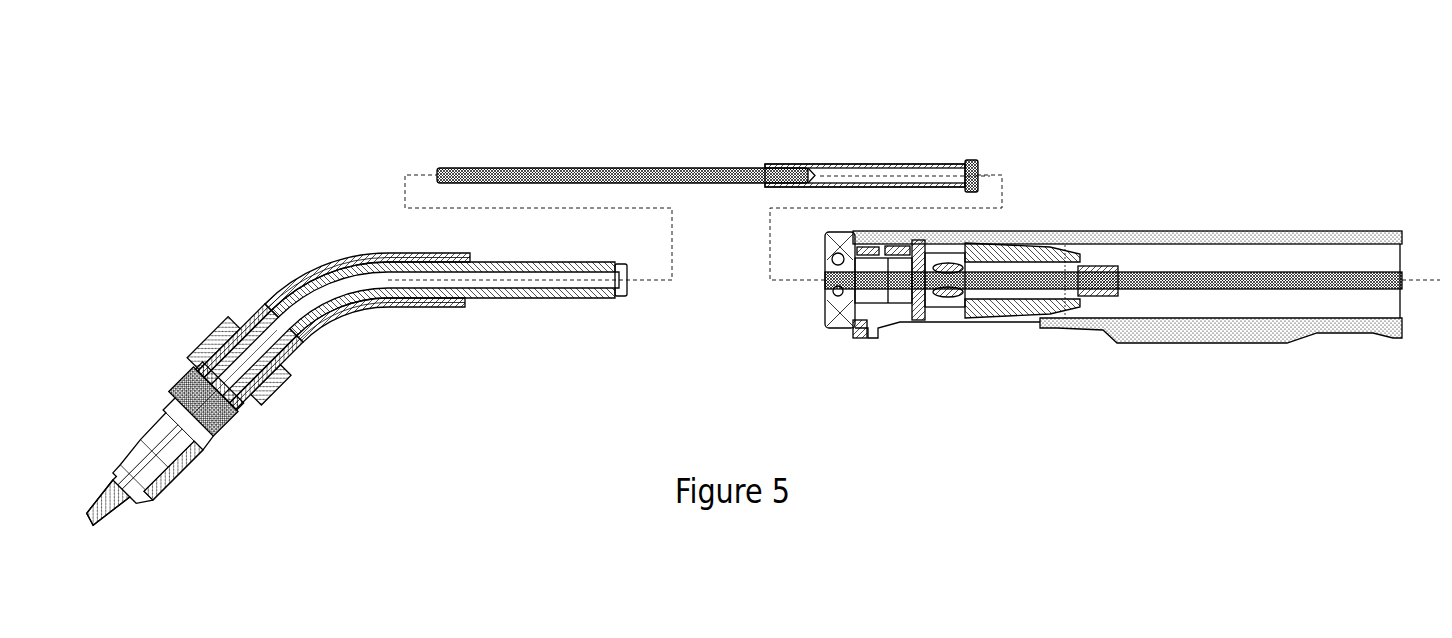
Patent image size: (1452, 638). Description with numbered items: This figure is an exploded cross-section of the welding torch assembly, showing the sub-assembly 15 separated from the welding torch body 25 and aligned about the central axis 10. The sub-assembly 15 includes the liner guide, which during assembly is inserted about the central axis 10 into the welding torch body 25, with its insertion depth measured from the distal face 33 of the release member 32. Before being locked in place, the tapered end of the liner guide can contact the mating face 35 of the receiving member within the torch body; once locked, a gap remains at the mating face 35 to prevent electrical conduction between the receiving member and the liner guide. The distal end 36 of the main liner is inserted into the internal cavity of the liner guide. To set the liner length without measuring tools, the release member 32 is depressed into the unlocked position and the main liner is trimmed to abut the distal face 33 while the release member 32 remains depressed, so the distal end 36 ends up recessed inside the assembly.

The central axis 10 is at (672, 265).
The sub-assembly 15 is at (328, 245).
The welding torch body 25 is at (1168, 187).
The release member 32 is at (838, 332).
The distal face 33 is at (823, 240).
The mating face 35 is at (983, 329).
The distal end 36 is at (823, 287).